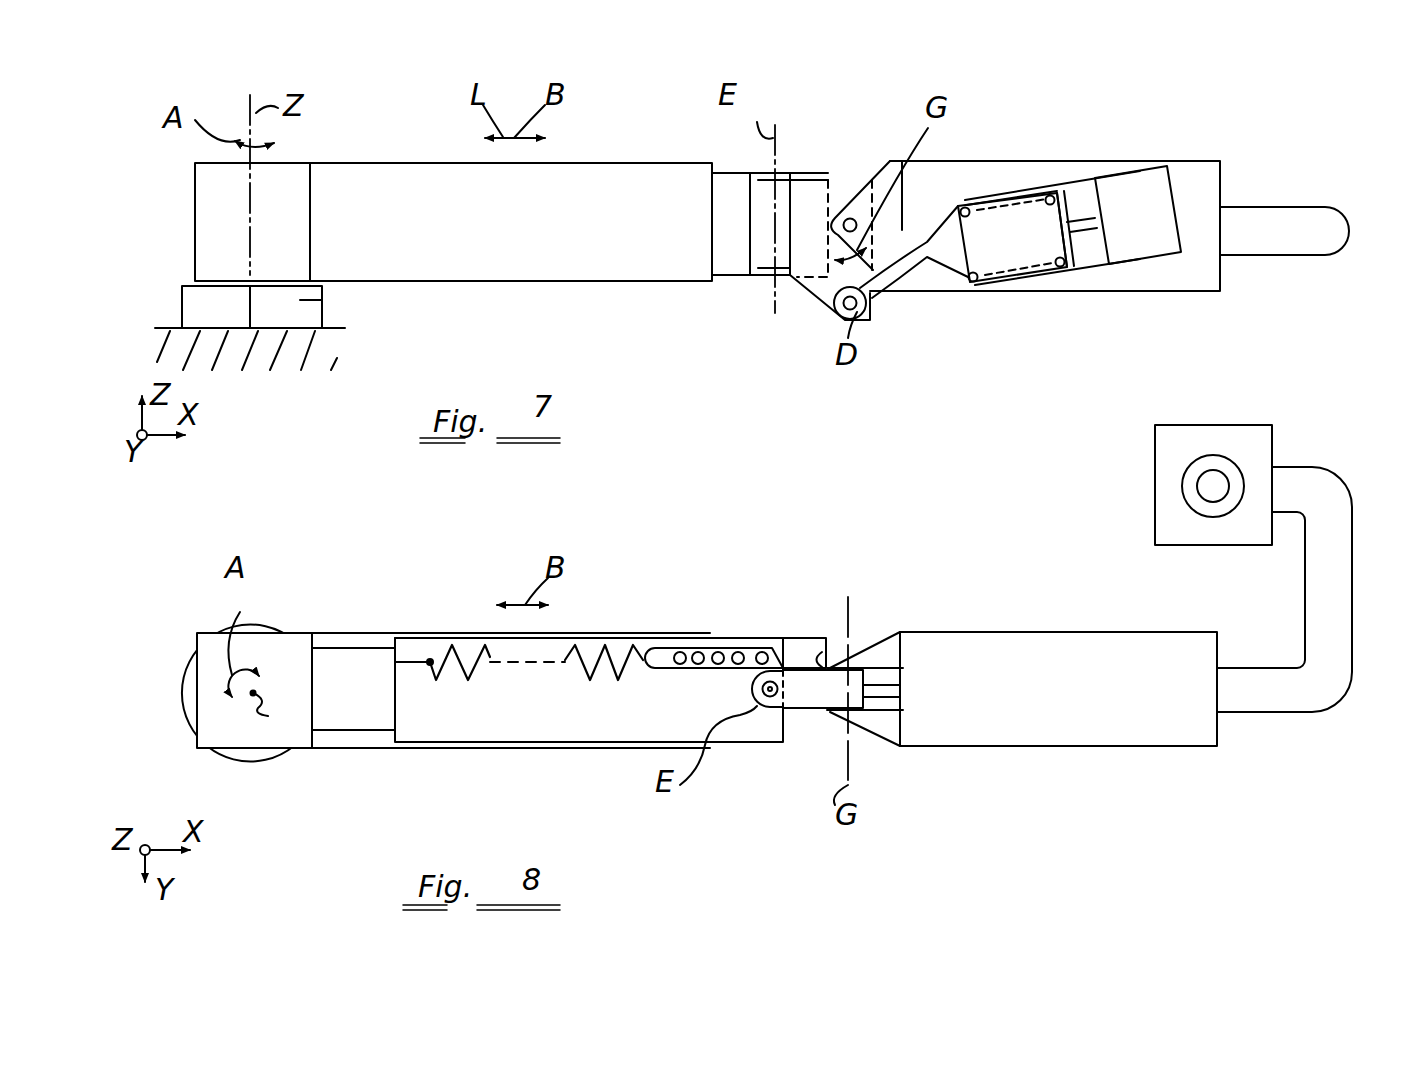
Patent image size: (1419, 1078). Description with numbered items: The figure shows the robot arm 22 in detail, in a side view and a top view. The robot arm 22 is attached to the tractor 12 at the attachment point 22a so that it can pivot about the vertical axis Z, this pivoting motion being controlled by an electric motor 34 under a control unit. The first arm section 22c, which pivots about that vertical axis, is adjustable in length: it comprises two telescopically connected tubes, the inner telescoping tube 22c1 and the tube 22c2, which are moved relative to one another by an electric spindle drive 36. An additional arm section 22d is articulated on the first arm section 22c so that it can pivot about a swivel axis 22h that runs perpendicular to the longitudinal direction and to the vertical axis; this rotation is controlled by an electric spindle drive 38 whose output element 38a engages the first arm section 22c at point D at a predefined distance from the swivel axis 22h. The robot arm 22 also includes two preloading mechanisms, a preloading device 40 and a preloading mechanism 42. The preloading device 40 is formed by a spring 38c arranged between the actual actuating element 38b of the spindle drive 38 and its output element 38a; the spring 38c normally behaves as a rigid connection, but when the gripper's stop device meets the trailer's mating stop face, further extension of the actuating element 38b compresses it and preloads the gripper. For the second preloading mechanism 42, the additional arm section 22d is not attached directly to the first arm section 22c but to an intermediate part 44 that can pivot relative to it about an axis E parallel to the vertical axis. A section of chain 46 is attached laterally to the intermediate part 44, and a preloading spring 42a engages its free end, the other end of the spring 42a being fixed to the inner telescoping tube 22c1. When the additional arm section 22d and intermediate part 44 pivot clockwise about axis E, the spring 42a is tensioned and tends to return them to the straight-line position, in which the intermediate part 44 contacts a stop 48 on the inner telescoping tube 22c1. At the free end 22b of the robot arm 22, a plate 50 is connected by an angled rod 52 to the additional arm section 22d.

In FIG. 7, the tractor 12 is at (300, 360).
In FIG. 7, the robot arm 22 is at (1300, 135).
In FIG. 8, the robot arm 22 is at (1343, 428).
In FIG. 7, the attachment point 22a is at (187, 305).
In FIG. 8, the attachment point 22a is at (250, 762).
In FIG. 8, the free end of the robot arm 22b is at (1165, 480).
In FIG. 7, the first arm section 22c is at (445, 270).
In FIG. 8, the first arm section 22c is at (470, 750).
In FIG. 8, the inner telescoping tube 22c1 is at (645, 638).
In FIG. 8, the telescoping tube 22c2 is at (665, 645).
In FIG. 7, the additional arm section 22d is at (1210, 295).
In FIG. 8, the additional arm section 22d is at (1135, 750).
In FIG. 7, the swivel axis 22h is at (850, 218).
In FIG. 7, the electric motor 34 is at (310, 307).
In FIG. 8, the electric spindle drive 36 is at (340, 660).
In FIG. 7, the electric spindle drive 38 is at (1130, 185).
In FIG. 7, the output element 38a is at (905, 270).
In FIG. 7, the actuating element 38b is at (1075, 235).
In FIG. 7, the spring 38c is at (1035, 280).
In FIG. 7, the preloading device 40 is at (1007, 138).
In FIG. 8, the preloading mechanism 42 is at (710, 805).
In FIG. 8, the preloading spring 42a is at (435, 650).
In FIG. 7, the intermediate part 44 is at (807, 190).
In FIG. 8, the intermediate part 44 is at (806, 700).
In FIG. 8, the section of chain 46 is at (773, 642).
In FIG. 8, the stop 48 is at (830, 664).
In FIG. 8, the plate 50 is at (1165, 540).
In FIG. 8, the angled rod 52 is at (1338, 614).